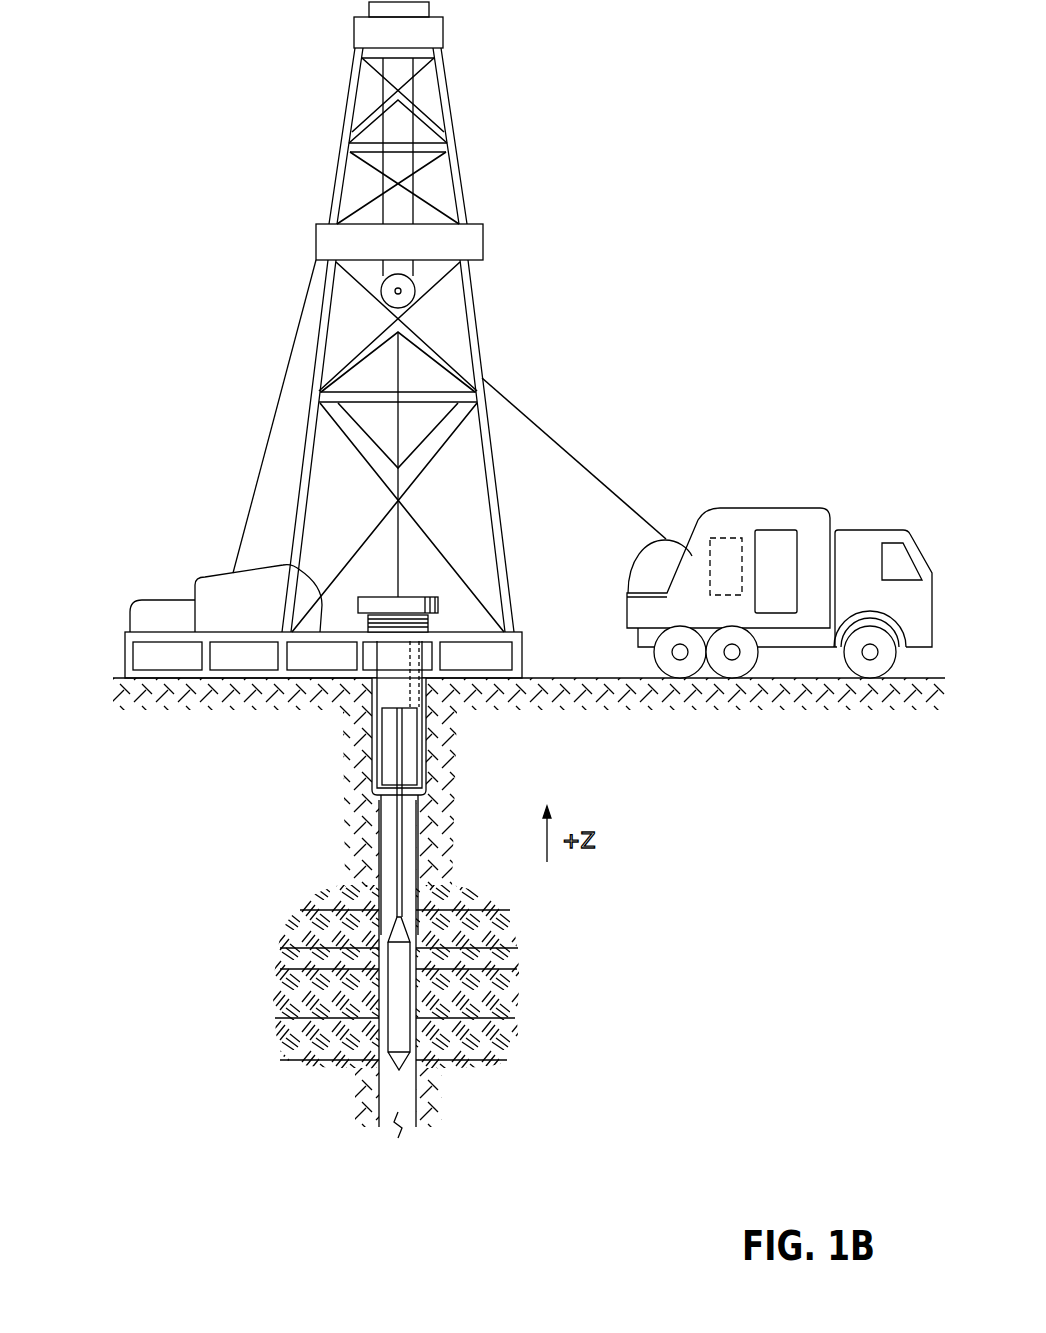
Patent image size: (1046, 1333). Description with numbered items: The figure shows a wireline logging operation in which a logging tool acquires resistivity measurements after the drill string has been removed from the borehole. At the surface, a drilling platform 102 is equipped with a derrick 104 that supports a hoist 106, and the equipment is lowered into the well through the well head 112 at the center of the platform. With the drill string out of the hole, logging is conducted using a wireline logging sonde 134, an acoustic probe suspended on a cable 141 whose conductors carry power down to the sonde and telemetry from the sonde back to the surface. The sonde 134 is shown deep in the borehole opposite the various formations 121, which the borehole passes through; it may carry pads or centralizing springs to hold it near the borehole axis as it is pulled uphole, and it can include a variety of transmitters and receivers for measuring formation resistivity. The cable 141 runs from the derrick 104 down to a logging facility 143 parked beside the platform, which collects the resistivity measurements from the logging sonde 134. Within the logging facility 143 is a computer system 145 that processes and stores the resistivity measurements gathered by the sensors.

The drilling platform 102 is at (125, 656).
The derrick 104 is at (461, 181).
The hoist 106 is at (408, 290).
The well head 112 is at (416, 597).
The formations 121 is at (540, 908).
The wireline logging sonde 134 is at (388, 988).
The cable 141 is at (520, 411).
The logging facility 143 is at (797, 507).
The computer system 145 is at (720, 537).